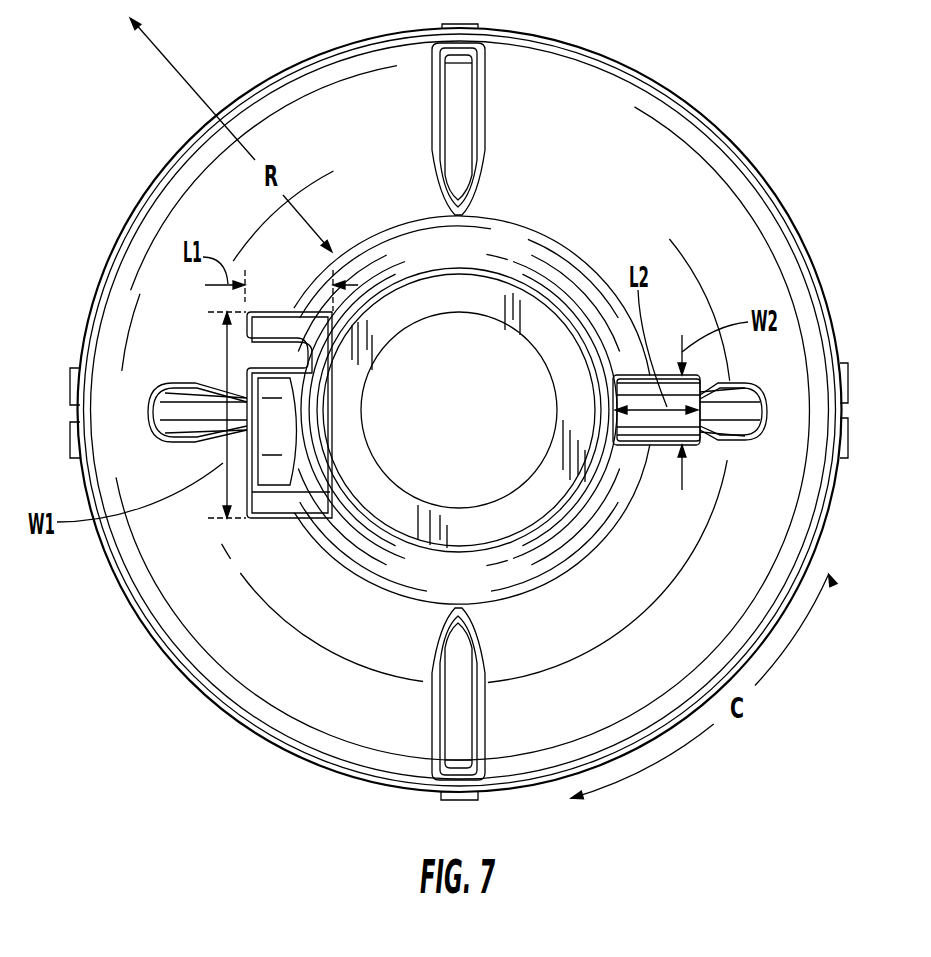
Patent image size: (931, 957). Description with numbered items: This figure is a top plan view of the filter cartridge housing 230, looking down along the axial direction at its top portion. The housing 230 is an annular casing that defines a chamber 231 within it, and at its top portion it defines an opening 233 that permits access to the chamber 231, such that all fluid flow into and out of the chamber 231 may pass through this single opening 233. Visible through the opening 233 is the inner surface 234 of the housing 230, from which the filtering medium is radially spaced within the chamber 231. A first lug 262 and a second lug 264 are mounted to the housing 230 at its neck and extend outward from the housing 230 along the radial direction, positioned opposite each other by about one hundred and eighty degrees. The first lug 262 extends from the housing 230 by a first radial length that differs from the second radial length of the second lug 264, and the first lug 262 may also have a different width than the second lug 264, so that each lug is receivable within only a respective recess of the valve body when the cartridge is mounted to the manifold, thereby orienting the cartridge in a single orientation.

The housing 230 is at (708, 171).
The chamber 231 is at (440, 473).
The opening 233 is at (487, 315).
The inner surface 234 is at (362, 423).
The first lug 262 is at (278, 507).
The second lug 264 is at (658, 437).